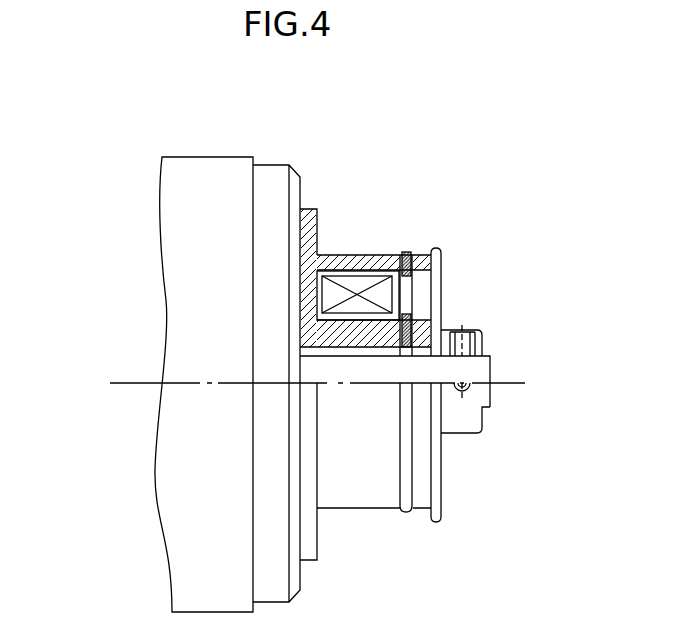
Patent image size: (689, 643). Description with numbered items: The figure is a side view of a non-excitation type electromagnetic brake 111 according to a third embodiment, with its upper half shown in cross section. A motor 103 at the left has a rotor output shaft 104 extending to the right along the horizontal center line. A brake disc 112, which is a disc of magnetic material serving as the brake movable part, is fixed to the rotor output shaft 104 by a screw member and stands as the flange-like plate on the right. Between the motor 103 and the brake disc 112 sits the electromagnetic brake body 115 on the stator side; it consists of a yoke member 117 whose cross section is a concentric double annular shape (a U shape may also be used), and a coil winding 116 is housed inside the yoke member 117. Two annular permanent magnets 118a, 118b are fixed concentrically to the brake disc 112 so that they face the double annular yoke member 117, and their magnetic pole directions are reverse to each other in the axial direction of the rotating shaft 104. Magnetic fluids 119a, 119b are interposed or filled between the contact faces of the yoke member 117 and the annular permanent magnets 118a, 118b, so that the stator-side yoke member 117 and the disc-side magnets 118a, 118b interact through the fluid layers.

The motor 103 is at (203, 157).
The rotor output shaft 104 is at (482, 371).
The non-excitation type electromagnetic brake 111 is at (418, 159).
The brake disc 112 is at (438, 475).
The electromagnetic brake body 115 is at (337, 246).
The coil winding 116 is at (355, 285).
The yoke member 117 is at (300, 333).
The annular permanent magnet 118a is at (423, 320).
The annular permanent magnet 118b is at (414, 255).
The magnetic fluid 119a is at (410, 314).
The magnetic fluid 119b is at (406, 253).